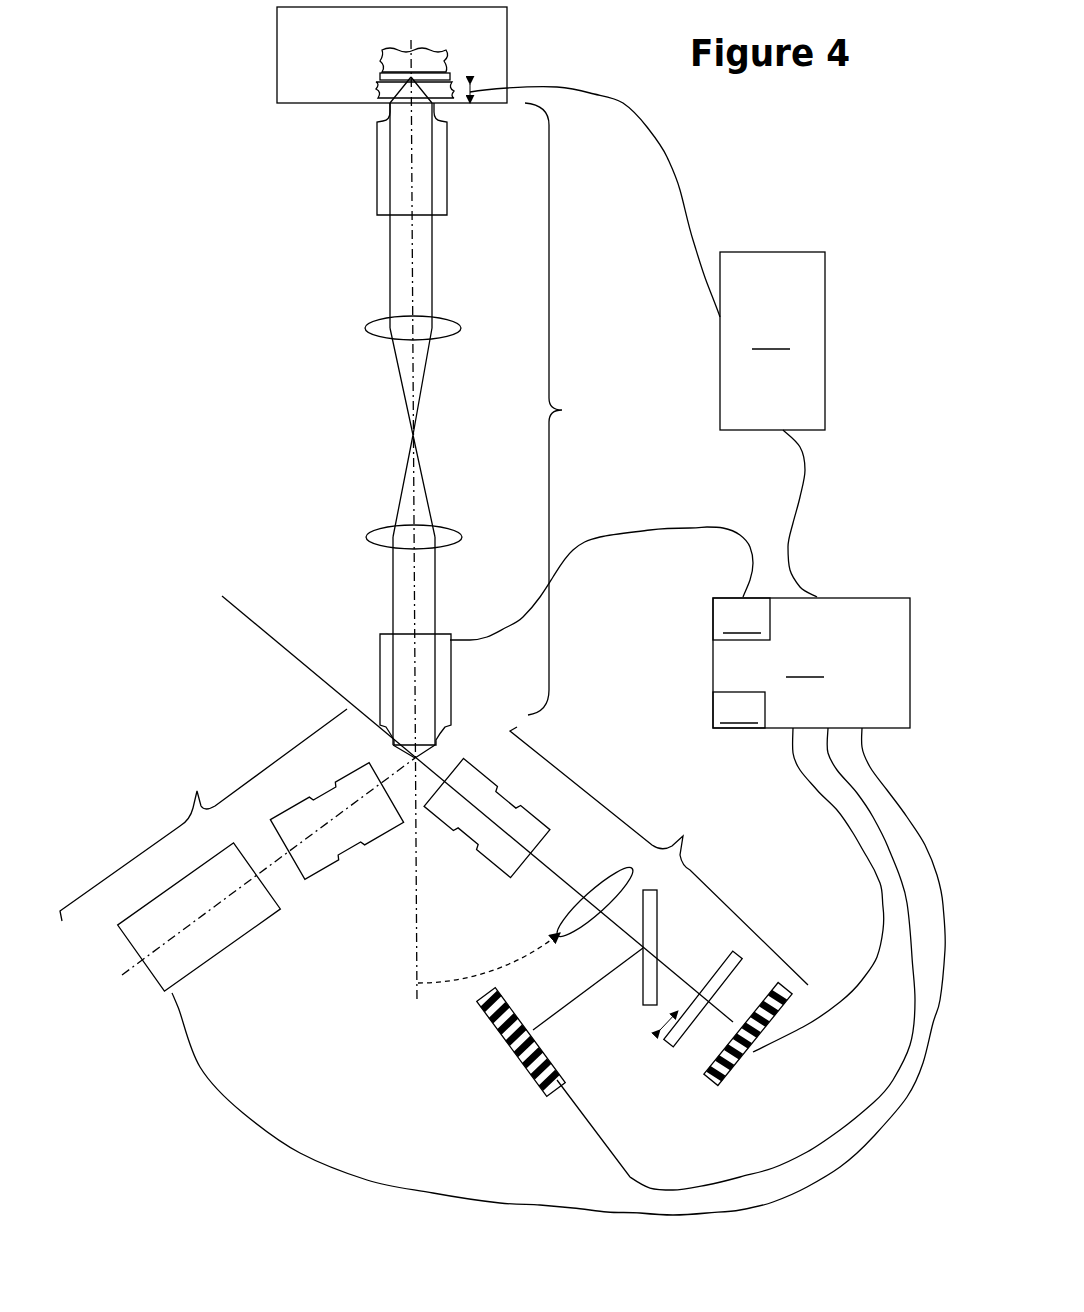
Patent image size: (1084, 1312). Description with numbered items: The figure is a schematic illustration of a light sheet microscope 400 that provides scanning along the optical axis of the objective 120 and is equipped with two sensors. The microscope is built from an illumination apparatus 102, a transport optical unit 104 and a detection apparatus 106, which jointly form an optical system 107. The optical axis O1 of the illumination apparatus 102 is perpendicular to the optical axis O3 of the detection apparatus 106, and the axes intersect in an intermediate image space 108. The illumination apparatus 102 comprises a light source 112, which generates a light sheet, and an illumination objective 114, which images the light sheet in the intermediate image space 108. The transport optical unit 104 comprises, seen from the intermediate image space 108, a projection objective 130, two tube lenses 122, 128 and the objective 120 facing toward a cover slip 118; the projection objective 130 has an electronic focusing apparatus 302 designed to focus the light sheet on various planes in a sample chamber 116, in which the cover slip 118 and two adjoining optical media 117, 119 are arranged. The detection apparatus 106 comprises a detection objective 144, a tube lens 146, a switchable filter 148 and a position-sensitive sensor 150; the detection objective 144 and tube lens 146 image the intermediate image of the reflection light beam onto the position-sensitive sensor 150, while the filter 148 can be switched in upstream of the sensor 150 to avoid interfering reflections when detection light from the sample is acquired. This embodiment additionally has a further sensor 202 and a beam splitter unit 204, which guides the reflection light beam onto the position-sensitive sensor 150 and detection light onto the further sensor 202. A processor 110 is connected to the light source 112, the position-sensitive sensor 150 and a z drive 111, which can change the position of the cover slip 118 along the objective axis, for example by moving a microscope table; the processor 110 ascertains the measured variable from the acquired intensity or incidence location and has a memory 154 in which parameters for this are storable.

The light sheet microscope 400 is at (238, 512).
The optical system 107 is at (310, 520).
The sample chamber 116 is at (507, 52).
The optical medium 117 is at (380, 56).
The cover slip 118 is at (380, 77).
The optical medium 119 is at (378, 90).
The objective 120 is at (449, 162).
The tube lens 122 is at (462, 328).
The tube lens 128 is at (464, 537).
The projection objective 130 is at (452, 658).
The transport optical unit 104 is at (572, 409).
The intermediate image space 108 is at (453, 752).
The z drive 111 is at (772, 341).
The processor 110 is at (811, 663).
The electronic focusing apparatus 302 is at (741, 619).
The memory 154 is at (739, 710).
The illumination apparatus 102 is at (203, 815).
The light source 112 is at (231, 960).
The illumination objective 114 is at (346, 856).
The detection apparatus 106 is at (659, 856).
The detection objective 144 is at (510, 792).
The tube lens 146 is at (618, 884).
The beam splitter unit 204 is at (658, 942).
The switchable filter 148 is at (735, 973).
The position-sensitive sensor 150 is at (728, 1072).
The further sensor 202 is at (542, 1046).
The optical axis of the illumination apparatus O1 is at (128, 978).
The optical axis of the detection apparatus O3 is at (272, 636).